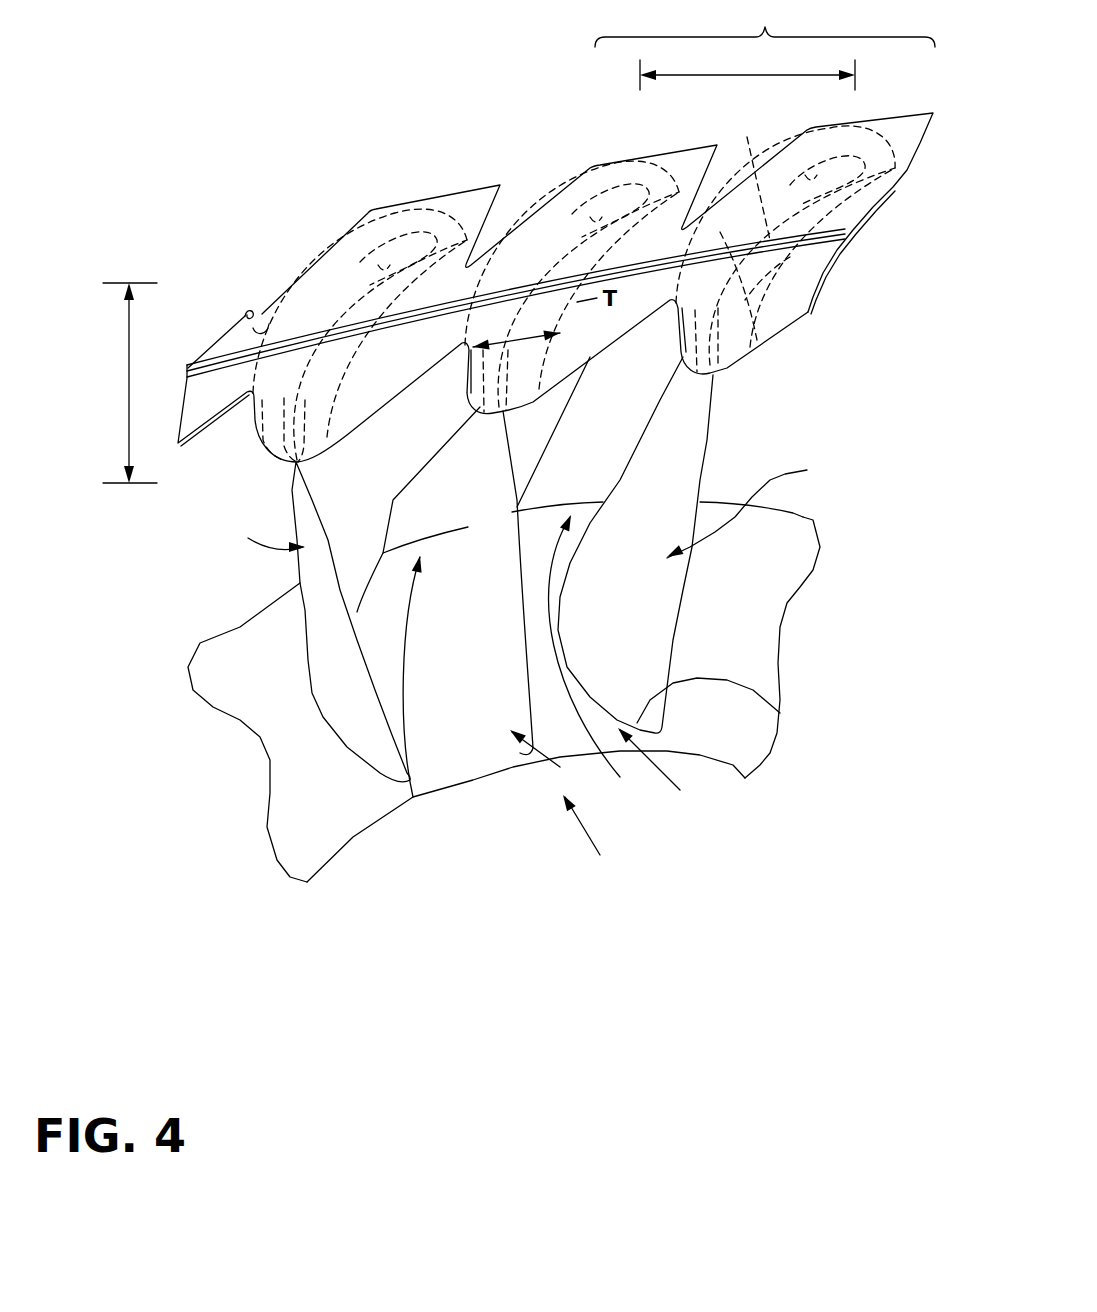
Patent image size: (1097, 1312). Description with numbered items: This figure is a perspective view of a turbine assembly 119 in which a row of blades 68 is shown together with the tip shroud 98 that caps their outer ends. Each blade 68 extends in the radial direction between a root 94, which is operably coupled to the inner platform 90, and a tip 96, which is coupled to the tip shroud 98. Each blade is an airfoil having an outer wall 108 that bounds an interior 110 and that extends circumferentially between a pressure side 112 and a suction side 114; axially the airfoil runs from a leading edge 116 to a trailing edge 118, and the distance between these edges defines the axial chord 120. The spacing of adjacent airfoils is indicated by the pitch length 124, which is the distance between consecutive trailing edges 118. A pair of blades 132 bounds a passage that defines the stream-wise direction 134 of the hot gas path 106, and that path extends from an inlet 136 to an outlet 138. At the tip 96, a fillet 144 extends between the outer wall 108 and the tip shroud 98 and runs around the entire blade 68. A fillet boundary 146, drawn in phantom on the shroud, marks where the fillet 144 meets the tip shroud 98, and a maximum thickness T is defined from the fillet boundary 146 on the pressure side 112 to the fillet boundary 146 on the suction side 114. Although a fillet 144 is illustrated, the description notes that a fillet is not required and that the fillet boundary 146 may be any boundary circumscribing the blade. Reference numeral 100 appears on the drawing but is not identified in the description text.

The blades 68 is at (527, 845).
The inner platform 90 is at (780, 560).
The root 94 is at (435, 620).
The tip 96 is at (750, 346).
The tip shroud 98 is at (267, 310).
The outer band 100 is at (225, 358).
The hot gas path 106 is at (603, 838).
The outer wall 108 is at (343, 491).
The interior 110 is at (557, 195).
The pressure side 112 is at (880, 190).
The suction side 114 is at (535, 278).
The leading edge 116 is at (292, 464).
The trailing edge 118 is at (888, 116).
The turbine assembly 119 is at (100, 166).
The axial chord 120 is at (127, 393).
The pitch length 124 is at (747, 70).
The pair of blades 132 is at (765, 23).
The stream-wise direction 134 is at (557, 550).
The inlet 136 is at (672, 769).
The outlet 138 is at (565, 163).
The fillet 144 is at (647, 163).
The fillet boundary 146 is at (905, 324).